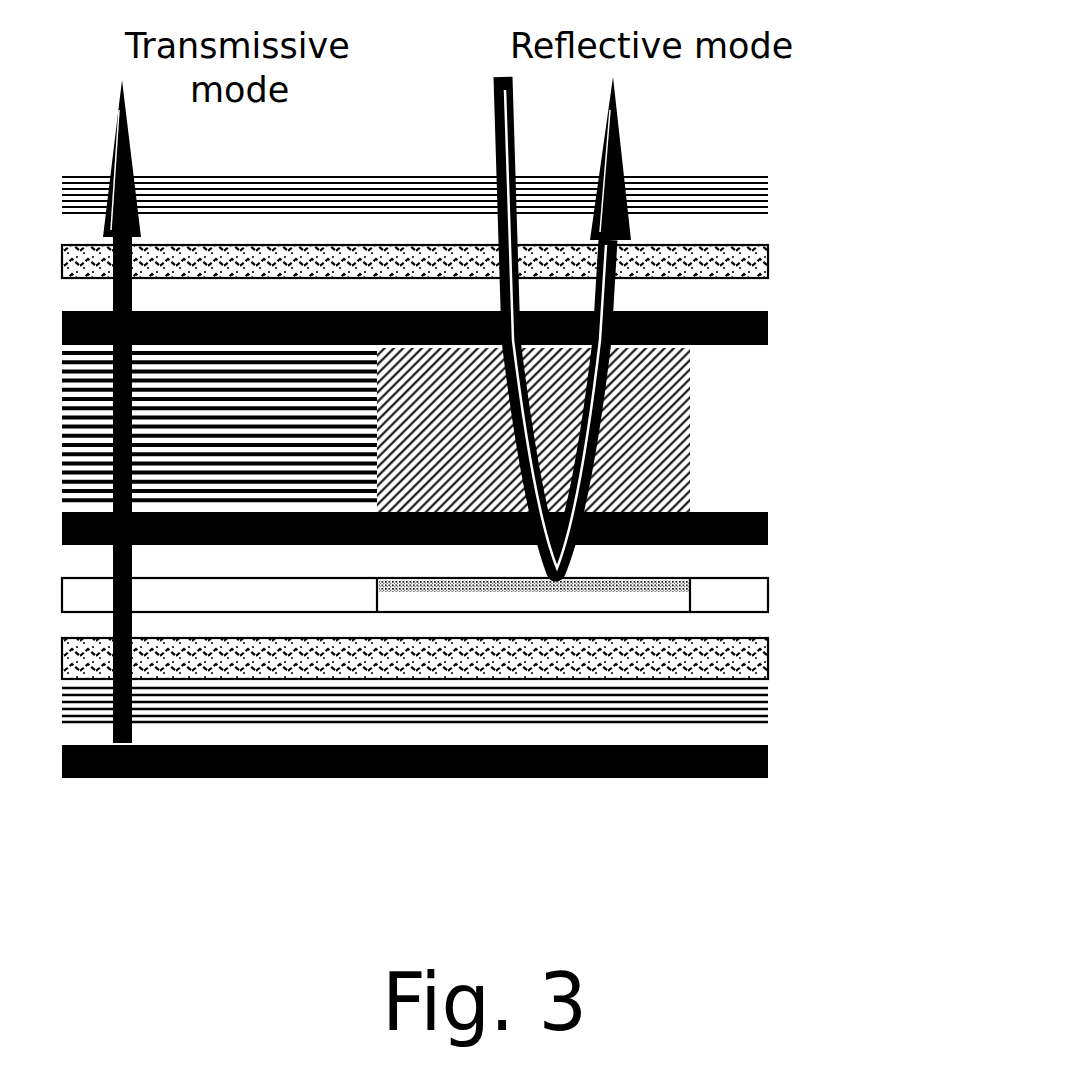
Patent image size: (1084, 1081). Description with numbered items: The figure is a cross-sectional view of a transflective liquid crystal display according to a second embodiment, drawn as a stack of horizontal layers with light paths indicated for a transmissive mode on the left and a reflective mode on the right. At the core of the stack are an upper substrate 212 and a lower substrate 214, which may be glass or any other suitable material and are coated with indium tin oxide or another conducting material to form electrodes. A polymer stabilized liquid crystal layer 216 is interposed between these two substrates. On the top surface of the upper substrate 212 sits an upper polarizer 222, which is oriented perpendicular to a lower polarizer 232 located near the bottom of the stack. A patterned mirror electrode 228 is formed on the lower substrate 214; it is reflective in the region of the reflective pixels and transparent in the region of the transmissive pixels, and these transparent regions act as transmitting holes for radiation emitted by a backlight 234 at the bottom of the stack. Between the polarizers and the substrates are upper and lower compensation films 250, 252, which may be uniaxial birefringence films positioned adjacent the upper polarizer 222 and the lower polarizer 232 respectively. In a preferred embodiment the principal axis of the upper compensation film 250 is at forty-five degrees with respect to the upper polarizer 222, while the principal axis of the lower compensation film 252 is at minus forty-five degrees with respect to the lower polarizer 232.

The upper polarizer 222 is at (770, 177).
The upper compensation film 250 is at (770, 243).
The upper substrate 212 is at (770, 313).
The polymer stabilized liquid crystal layer 216 is at (694, 407).
The lower substrate 214 is at (771, 511).
The patterned mirror electrode 228 is at (770, 578).
The lower compensation film 252 is at (735, 644).
The lower polarizer 232 is at (771, 718).
The backlight 234 is at (771, 747).